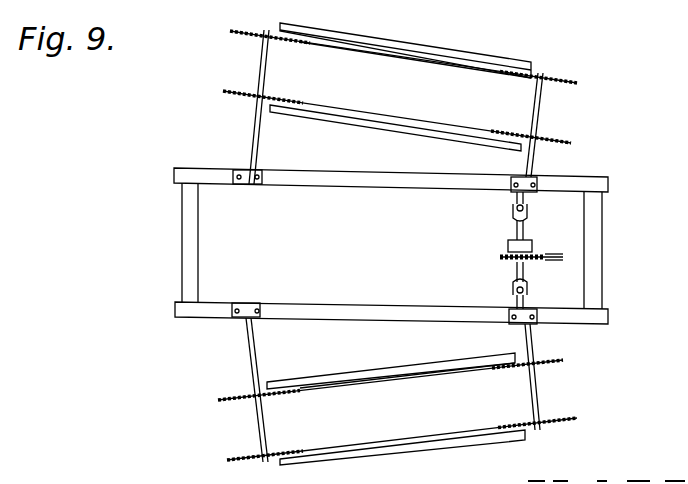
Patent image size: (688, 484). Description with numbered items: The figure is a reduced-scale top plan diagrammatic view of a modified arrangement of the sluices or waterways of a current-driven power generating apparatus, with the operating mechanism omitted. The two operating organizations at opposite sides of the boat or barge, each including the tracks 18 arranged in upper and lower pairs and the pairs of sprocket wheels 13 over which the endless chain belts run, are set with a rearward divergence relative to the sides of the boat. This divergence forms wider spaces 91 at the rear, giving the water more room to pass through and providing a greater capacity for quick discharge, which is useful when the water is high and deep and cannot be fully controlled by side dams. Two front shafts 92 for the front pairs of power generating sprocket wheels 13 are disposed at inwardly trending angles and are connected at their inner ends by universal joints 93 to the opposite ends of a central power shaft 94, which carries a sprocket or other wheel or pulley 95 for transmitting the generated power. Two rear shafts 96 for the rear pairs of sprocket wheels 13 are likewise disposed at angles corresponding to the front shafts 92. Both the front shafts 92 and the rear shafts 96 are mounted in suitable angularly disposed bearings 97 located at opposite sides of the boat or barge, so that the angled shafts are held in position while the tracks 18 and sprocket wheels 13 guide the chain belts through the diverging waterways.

The sprocket wheels 13 is at (251, 33).
The tracks 18 is at (431, 57).
The wider spaces 91 is at (415, 215).
The front shafts 92 is at (541, 113).
The universal joints 93 is at (530, 210).
The power shaft 94 is at (513, 225).
The sprocket wheel 95 is at (504, 258).
The rear shafts 96 is at (252, 127).
The bearings 97 is at (252, 186).